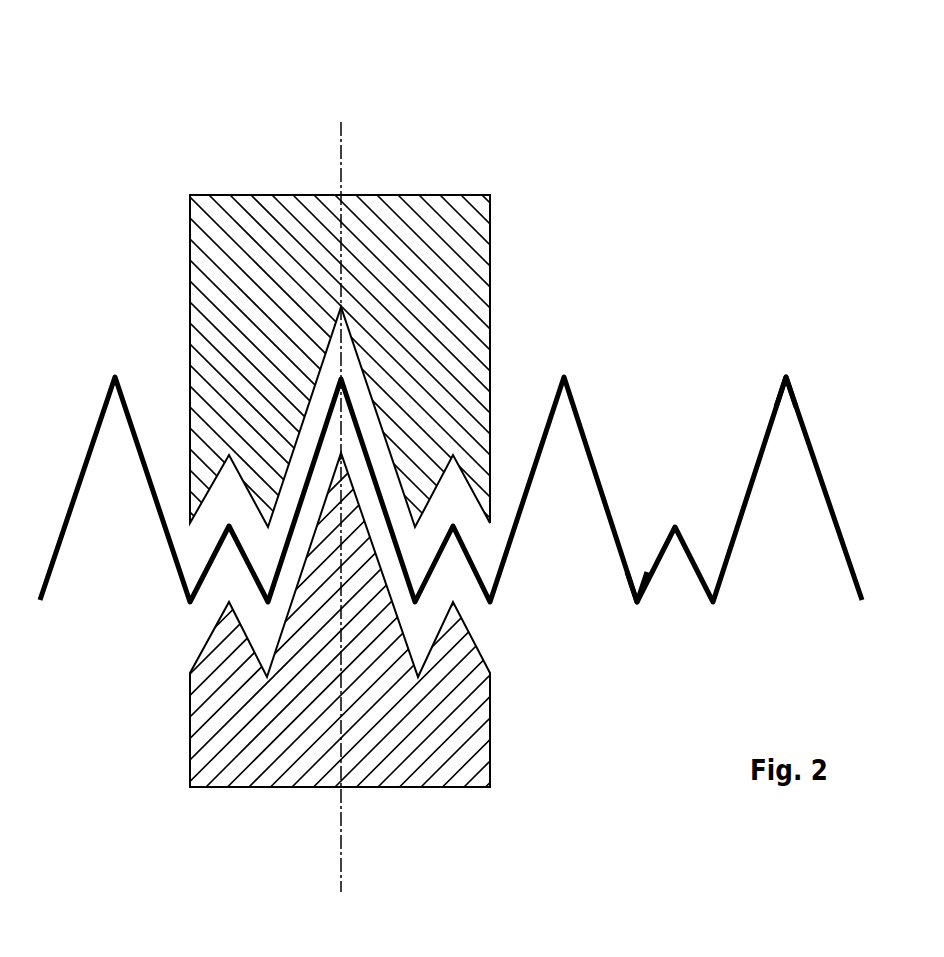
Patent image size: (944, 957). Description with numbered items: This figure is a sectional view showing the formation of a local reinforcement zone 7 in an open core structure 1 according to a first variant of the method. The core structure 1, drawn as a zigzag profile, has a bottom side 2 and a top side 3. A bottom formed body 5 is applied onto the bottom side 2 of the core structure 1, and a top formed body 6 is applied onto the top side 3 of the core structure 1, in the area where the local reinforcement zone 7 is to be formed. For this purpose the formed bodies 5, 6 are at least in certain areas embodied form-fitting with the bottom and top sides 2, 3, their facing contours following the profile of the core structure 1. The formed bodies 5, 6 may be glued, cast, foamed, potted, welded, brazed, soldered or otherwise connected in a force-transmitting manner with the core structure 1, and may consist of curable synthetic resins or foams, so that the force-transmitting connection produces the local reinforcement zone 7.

The core structure 1 is at (833, 512).
The bottom side 2 is at (608, 572).
The top side 3 is at (726, 388).
The bottom formed body 5 is at (266, 764).
The top formed body 6 is at (457, 228).
The local reinforcement zone 7 is at (434, 92).